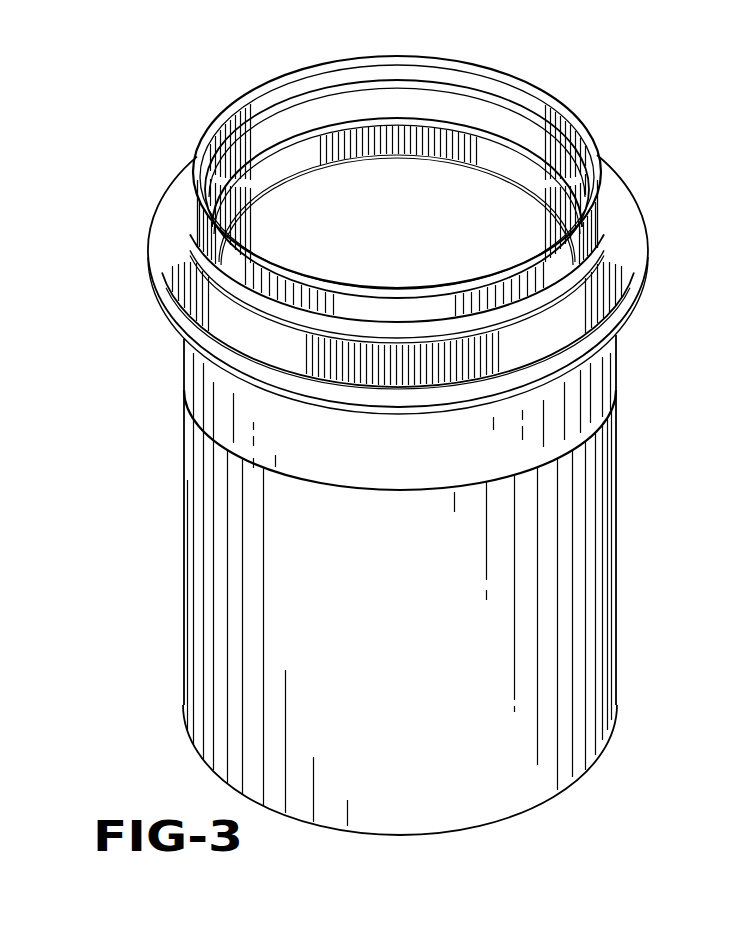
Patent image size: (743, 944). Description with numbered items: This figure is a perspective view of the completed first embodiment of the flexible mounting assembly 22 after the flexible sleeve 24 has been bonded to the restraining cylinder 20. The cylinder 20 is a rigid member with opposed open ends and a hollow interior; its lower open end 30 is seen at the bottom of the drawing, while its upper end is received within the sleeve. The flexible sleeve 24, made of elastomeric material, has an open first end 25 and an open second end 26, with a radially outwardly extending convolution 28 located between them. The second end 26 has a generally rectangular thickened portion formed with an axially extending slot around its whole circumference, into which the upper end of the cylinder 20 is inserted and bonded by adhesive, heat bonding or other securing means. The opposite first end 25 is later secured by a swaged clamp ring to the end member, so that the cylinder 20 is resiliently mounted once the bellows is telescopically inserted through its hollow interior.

The cylinder 20 is at (618, 561).
The flexible mounting assembly 22 is at (646, 276).
The flexible sleeve 24 is at (633, 211).
The first end 25 is at (500, 90).
The second end 26 is at (223, 422).
The convolution 28 is at (150, 262).
The open end 30 is at (533, 808).